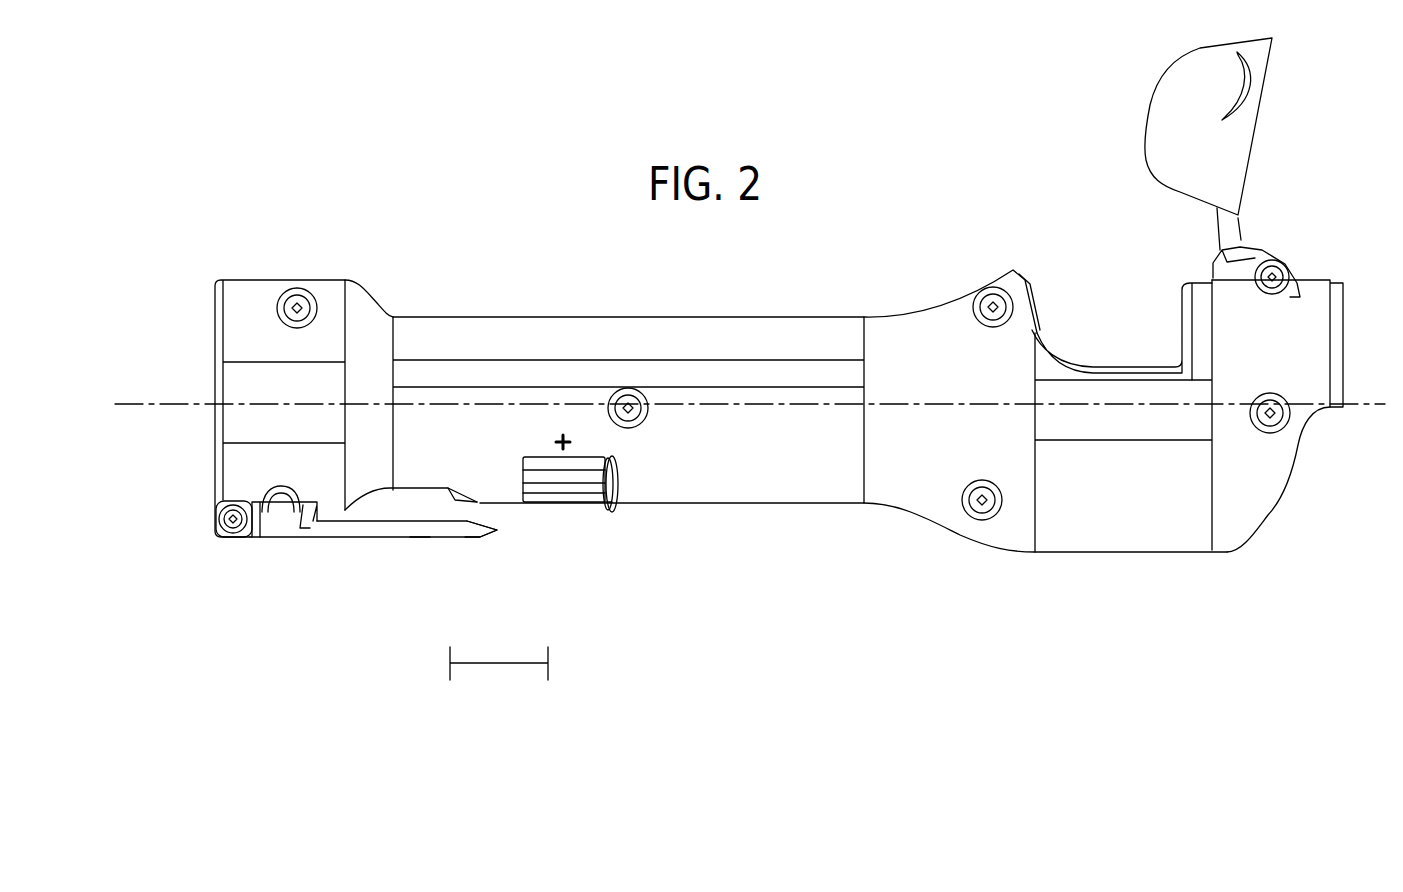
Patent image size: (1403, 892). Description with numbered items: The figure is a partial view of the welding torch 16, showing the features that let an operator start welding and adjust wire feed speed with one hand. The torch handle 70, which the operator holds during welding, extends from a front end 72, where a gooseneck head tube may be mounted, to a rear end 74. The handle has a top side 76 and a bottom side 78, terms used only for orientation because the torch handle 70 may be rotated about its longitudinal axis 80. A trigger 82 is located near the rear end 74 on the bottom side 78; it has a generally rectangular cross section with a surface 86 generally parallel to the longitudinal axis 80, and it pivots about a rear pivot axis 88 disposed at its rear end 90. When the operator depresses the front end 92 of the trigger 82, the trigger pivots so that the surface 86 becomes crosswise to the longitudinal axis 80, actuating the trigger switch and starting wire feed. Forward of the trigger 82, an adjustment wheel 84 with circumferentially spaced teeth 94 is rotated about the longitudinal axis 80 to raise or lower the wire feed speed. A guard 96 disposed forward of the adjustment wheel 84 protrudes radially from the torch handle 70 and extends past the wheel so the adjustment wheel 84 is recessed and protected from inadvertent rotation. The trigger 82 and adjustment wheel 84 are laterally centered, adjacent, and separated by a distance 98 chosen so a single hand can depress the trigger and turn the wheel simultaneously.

The welding torch 16 is at (967, 128).
The torch handle 70 is at (628, 317).
The front end 72 is at (1347, 293).
The rear end 74 is at (213, 300).
The top side 76 is at (592, 273).
The bottom side 78 is at (838, 605).
The longitudinal axis 80 is at (167, 404).
The trigger 82 is at (377, 540).
The adjustment wheel 84 is at (562, 503).
The surface 86 is at (418, 562).
The rear pivot axis 88 is at (230, 542).
The rear end 90 is at (253, 540).
The front end 92 is at (463, 540).
The circumferentially spaced teeth 94 is at (593, 510).
The guard 96 is at (615, 510).
The distance 98 is at (498, 663).